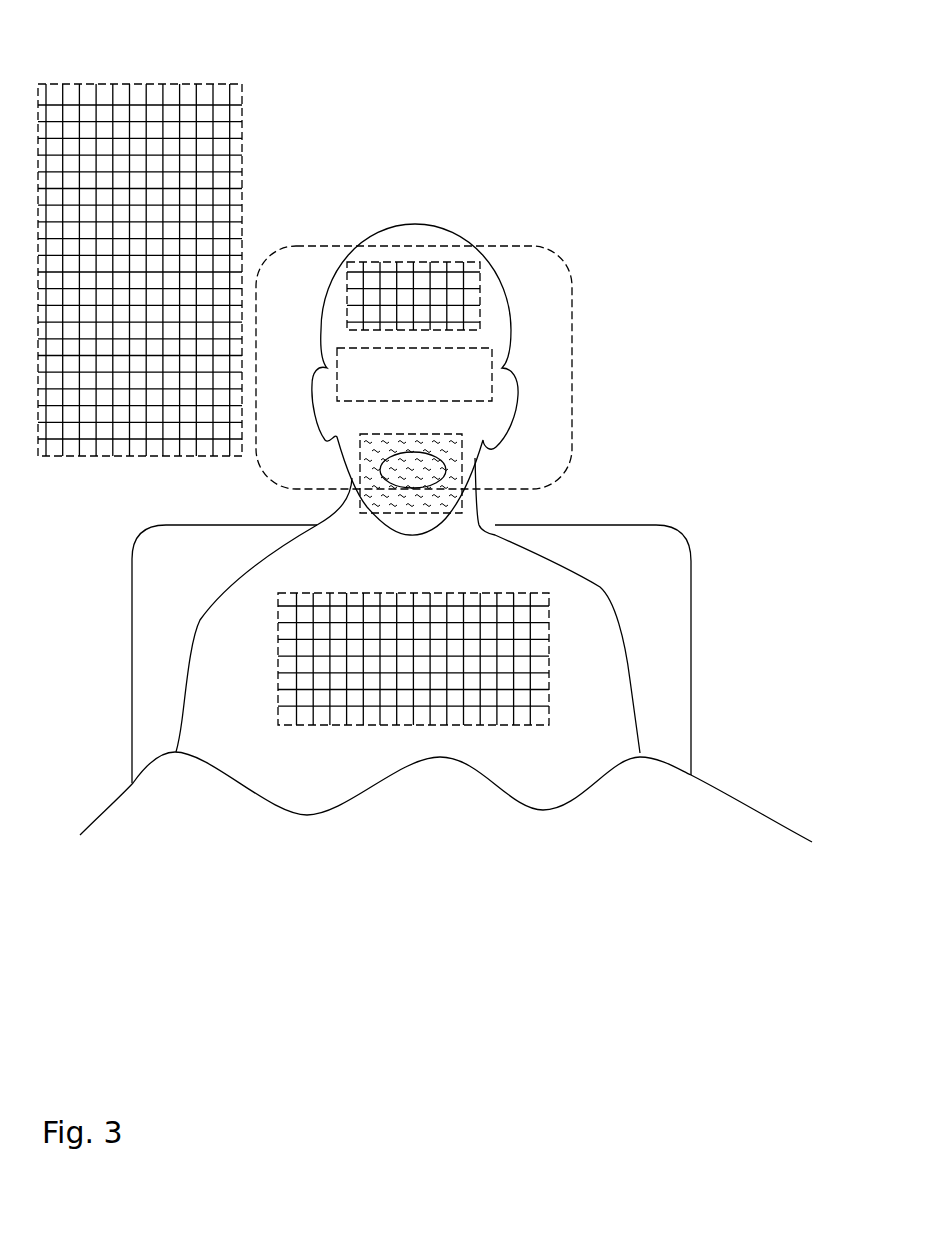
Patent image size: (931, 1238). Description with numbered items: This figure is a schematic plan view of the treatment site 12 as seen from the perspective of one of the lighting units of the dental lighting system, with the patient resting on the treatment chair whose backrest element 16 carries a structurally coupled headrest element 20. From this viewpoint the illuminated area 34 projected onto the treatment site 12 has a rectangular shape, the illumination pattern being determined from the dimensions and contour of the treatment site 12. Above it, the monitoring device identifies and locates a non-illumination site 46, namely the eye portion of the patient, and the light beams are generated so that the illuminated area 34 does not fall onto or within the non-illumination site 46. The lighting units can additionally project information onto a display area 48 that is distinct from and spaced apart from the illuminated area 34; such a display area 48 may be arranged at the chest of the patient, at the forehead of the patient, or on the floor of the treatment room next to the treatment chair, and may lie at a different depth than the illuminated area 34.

The treatment site 12 is at (430, 487).
The backrest element 16 is at (657, 690).
The headrest element 20 is at (553, 285).
The illuminated area 34 is at (450, 447).
The non-illumination site 46 is at (485, 365).
The display area 48 is at (212, 118).